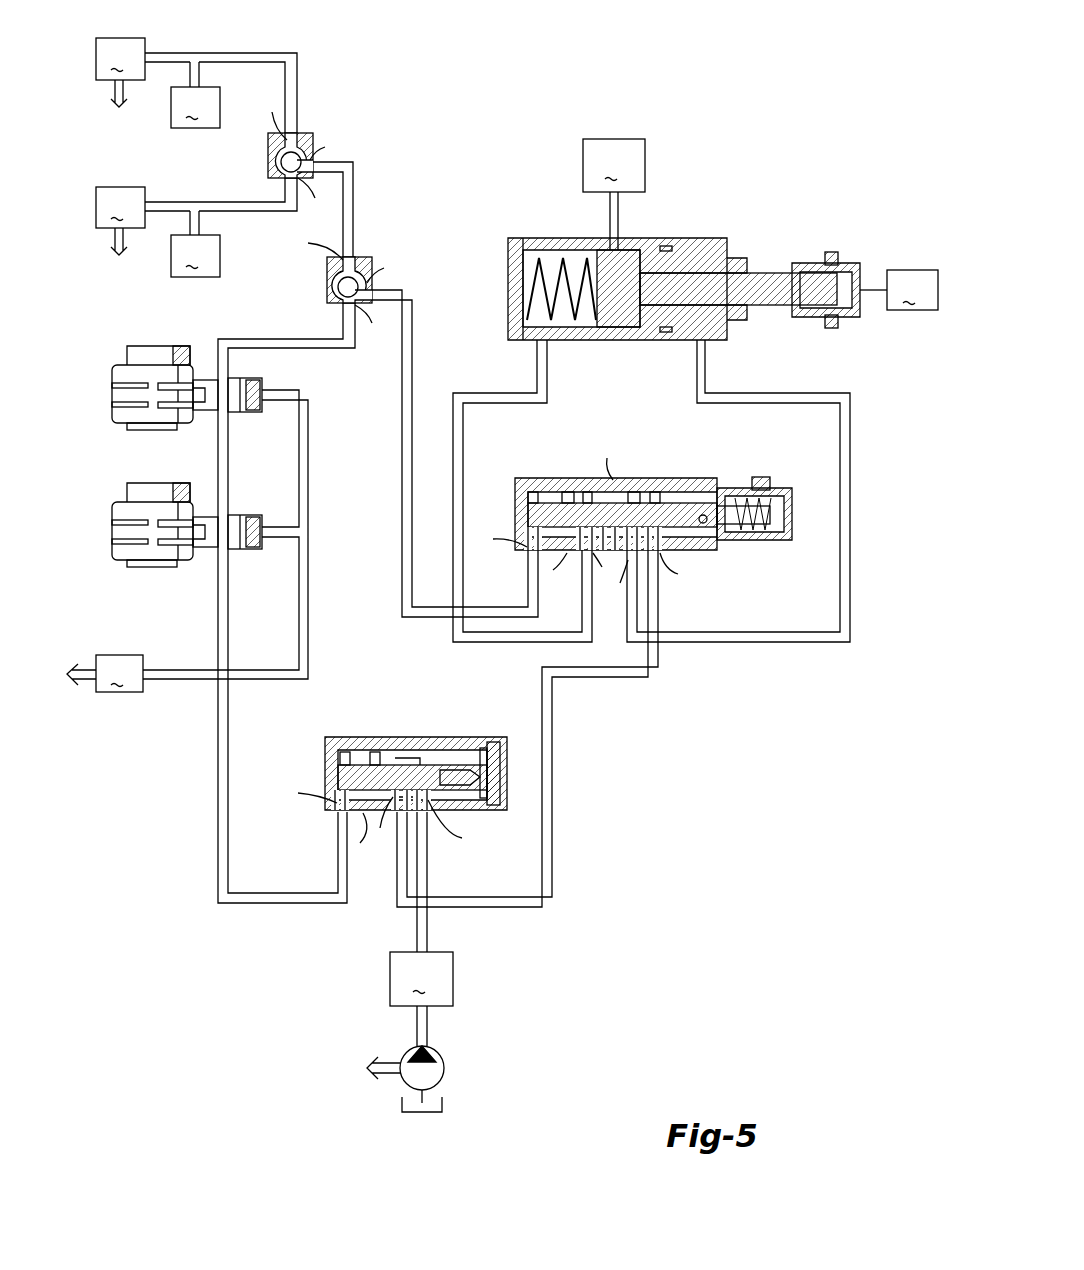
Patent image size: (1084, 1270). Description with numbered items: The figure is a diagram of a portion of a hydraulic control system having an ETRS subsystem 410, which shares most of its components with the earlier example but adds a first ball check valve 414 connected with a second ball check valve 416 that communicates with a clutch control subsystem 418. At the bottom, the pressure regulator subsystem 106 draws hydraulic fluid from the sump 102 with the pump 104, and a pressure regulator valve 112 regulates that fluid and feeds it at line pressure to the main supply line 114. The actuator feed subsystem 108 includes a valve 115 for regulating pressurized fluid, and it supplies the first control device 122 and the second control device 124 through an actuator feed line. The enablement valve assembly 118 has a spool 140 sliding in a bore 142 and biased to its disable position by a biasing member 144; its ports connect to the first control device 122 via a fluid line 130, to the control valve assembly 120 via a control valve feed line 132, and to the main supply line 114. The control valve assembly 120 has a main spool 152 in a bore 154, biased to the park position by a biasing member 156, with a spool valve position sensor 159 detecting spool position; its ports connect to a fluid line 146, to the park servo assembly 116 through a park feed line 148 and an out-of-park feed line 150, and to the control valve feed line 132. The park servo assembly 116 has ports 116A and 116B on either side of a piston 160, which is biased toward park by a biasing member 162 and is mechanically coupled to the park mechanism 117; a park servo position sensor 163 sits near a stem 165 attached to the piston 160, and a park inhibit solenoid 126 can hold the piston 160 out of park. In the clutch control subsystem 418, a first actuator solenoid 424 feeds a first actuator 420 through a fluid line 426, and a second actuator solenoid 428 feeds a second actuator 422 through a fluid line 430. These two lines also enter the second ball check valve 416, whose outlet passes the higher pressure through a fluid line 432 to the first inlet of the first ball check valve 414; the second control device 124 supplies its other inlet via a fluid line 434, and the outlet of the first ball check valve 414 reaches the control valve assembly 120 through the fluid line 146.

The sump 102 is at (443, 1103).
The pump 104 is at (440, 1053).
The pressure regulator subsystem 106 is at (473, 1023).
The actuator feed subsystem 108 is at (122, 698).
The pressure regulator valve 112 is at (421, 979).
The main supply line 114 is at (422, 868).
The valve 115 is at (119, 673).
The park servo assembly 116 is at (717, 227).
The port 116A is at (695, 330).
The port 116B is at (547, 330).
The park mechanism 117 is at (899, 290).
The enablement valve assembly 118 is at (317, 737).
The control valve assembly 120 is at (700, 467).
The first control device 122 is at (163, 563).
The second control device 124 is at (150, 345).
The park inhibit solenoid 126 is at (614, 194).
The fluid line 130 is at (218, 823).
The control valve feed line 132 is at (552, 822).
The spool 140 is at (425, 777).
The bore 142 is at (342, 760).
The biasing member 144 is at (483, 763).
The fluid line 146 is at (413, 620).
The park feed line 148 is at (457, 437).
The out-of-park feed line 150 is at (850, 440).
The main spool 152 is at (667, 503).
The bore 154 is at (697, 523).
The biasing member 156 is at (737, 537).
The spool valve position sensor 159 is at (770, 483).
The piston 160 is at (648, 257).
The biasing member 162 is at (533, 303).
The park servo position sensor 163 is at (842, 253).
The stem 165 is at (765, 273).
The ETRS subsystem 410 is at (713, 878).
The first ball check valve 414 is at (373, 240).
The second ball check valve 416 is at (318, 107).
The clutch control subsystem 418 is at (190, 33).
The first actuator 420 is at (195, 95).
The second actuator 422 is at (195, 244).
The first actuator solenoid 424 is at (120, 72).
The fluid line 426 is at (262, 53).
The second actuator solenoid 428 is at (120, 221).
The fluid line 430 is at (223, 202).
The fluid line 432 is at (353, 190).
The fluid line 434 is at (255, 339).